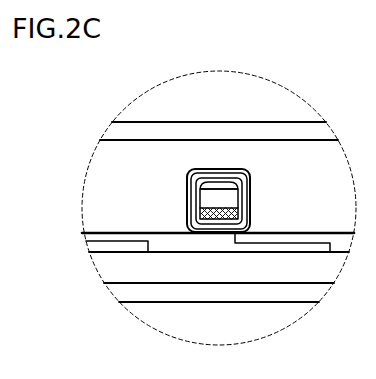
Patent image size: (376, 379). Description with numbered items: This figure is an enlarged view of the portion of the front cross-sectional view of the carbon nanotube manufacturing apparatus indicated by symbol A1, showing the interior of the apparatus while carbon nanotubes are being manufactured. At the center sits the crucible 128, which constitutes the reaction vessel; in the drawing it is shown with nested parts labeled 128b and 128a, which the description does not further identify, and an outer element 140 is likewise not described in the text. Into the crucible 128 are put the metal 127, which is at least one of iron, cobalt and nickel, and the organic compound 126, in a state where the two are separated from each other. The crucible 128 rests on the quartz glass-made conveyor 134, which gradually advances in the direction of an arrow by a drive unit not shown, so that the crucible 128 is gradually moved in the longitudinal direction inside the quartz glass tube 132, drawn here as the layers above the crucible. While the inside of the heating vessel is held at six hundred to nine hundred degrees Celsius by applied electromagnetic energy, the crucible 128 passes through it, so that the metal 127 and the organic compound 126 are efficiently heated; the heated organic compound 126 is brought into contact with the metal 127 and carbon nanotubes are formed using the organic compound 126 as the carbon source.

The portion indicated by symbol A1 is at (218, 67).
The quartz glass tube 132 is at (306, 121).
The quartz glass-made conveyor 134 is at (206, 244).
The outer coating 140 is at (240, 176).
The organic compound 126 is at (202, 204).
The metal 127 is at (207, 186).
The crucible 128 is at (275, 183).
The upper core portion 128b is at (246, 193).
The lower core portion 128a is at (248, 214).